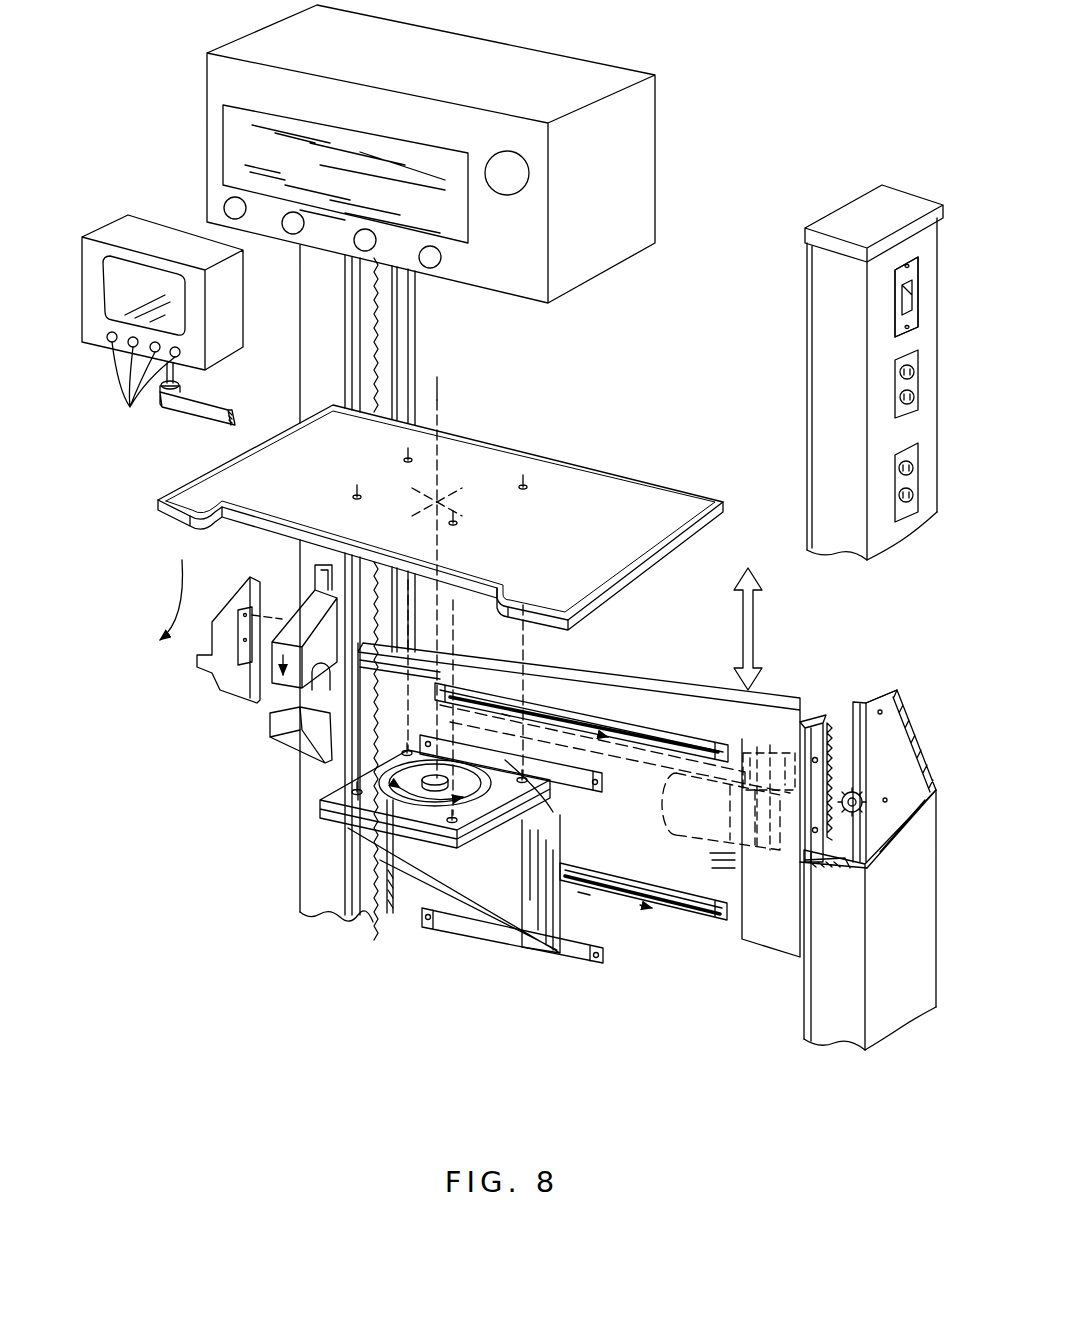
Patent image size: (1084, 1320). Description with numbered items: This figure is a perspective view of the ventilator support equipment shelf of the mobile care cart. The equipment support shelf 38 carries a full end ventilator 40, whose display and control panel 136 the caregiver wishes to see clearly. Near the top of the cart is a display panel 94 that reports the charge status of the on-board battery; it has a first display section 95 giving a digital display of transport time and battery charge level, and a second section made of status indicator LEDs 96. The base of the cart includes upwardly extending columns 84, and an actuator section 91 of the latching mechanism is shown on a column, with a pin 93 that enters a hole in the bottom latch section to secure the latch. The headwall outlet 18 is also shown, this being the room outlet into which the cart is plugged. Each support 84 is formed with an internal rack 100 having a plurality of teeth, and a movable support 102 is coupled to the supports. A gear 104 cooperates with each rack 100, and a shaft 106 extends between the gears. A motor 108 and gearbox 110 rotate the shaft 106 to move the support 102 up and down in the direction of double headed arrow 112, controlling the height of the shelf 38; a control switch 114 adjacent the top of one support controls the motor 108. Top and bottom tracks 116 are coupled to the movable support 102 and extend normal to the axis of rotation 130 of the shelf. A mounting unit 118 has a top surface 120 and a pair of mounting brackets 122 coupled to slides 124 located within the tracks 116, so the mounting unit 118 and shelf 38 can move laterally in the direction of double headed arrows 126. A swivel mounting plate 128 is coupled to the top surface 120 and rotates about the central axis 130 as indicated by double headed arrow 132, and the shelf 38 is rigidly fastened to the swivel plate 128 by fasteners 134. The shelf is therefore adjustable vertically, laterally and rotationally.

The ventilator 40 is at (535, 78).
The display and control panel 136 is at (262, 152).
The display panel 94 is at (148, 210).
The first display section 95 is at (167, 288).
The status indicator LEDs 96 is at (173, 393).
The axis of rotation 130 is at (440, 405).
The equipment support shelf 38 is at (578, 508).
The columns 84 is at (810, 278).
The control switch 114 is at (903, 305).
The headwall outlet 18 is at (898, 472).
The double headed arrow 112 is at (741, 624).
The slides 124 is at (633, 737).
The double headed arrows 126 is at (570, 722).
The tracks 116 is at (700, 740).
The internal rack 100 is at (842, 720).
The gear 104 is at (857, 797).
The actuator section 91 is at (230, 680).
The pin 93 is at (255, 660).
The swivel mounting plate 128 is at (350, 800).
The double headed arrow 132 is at (400, 792).
The fasteners 134 is at (553, 812).
The top surface 120 is at (557, 780).
The mounting brackets 122 is at (583, 782).
The motor 108 is at (688, 843).
The gearbox 110 is at (752, 850).
The shaft 106 is at (768, 860).
The movable support 102 is at (760, 935).
The mounting unit 118 is at (487, 913).